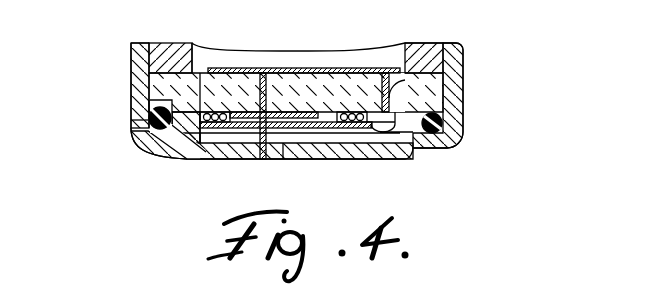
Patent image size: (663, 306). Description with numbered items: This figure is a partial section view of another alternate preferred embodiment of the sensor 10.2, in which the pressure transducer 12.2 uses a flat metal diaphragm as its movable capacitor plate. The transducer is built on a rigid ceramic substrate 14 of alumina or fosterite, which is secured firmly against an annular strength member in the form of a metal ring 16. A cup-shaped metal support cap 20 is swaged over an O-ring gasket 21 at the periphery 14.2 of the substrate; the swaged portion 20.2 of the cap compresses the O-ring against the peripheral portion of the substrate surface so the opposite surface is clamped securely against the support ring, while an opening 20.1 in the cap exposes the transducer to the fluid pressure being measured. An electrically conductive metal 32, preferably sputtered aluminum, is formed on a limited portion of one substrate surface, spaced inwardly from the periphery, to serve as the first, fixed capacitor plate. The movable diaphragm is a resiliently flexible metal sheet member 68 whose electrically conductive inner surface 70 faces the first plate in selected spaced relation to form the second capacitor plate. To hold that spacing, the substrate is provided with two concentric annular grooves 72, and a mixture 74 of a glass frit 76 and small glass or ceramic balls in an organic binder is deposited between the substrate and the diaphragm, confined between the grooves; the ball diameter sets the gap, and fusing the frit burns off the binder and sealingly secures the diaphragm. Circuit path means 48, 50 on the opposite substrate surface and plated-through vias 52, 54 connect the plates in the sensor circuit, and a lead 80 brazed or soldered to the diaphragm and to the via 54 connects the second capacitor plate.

The sensor 10.2 is at (472, 62).
The pressure transducer 12.2 is at (436, 90).
The ceramic substrate 14 is at (155, 80).
The periphery of the substrate 14.2 is at (150, 108).
The metal ring 16 is at (174, 44).
The metal support cap 20 is at (133, 50).
The opening 20.1 is at (303, 150).
The swaged portion of the cap 20.2 is at (395, 158).
The O-ring gasket 21 is at (133, 132).
The electrically conductive metal 32 is at (308, 92).
The circuit path means 48 is at (227, 70).
The circuit path means 50 is at (313, 68).
The via 52 is at (277, 68).
The via 54 is at (411, 60).
The metal sheet member 68 is at (196, 142).
The inner surface of the diaphragm 70 is at (261, 144).
The concentric annular grooves 72 is at (197, 107).
The mixture 74 is at (159, 130).
The glass frit 76 is at (207, 126).
The lead 80 is at (391, 118).